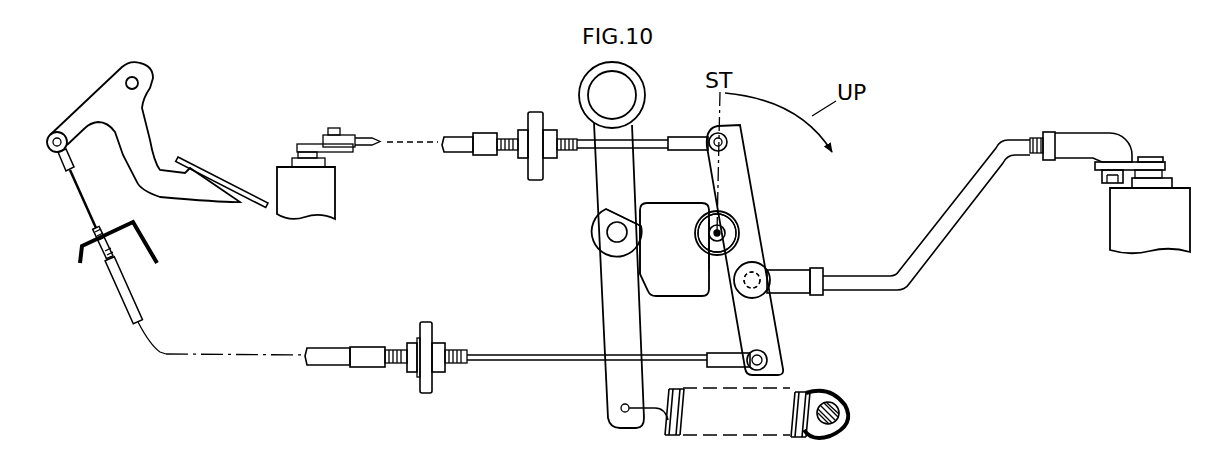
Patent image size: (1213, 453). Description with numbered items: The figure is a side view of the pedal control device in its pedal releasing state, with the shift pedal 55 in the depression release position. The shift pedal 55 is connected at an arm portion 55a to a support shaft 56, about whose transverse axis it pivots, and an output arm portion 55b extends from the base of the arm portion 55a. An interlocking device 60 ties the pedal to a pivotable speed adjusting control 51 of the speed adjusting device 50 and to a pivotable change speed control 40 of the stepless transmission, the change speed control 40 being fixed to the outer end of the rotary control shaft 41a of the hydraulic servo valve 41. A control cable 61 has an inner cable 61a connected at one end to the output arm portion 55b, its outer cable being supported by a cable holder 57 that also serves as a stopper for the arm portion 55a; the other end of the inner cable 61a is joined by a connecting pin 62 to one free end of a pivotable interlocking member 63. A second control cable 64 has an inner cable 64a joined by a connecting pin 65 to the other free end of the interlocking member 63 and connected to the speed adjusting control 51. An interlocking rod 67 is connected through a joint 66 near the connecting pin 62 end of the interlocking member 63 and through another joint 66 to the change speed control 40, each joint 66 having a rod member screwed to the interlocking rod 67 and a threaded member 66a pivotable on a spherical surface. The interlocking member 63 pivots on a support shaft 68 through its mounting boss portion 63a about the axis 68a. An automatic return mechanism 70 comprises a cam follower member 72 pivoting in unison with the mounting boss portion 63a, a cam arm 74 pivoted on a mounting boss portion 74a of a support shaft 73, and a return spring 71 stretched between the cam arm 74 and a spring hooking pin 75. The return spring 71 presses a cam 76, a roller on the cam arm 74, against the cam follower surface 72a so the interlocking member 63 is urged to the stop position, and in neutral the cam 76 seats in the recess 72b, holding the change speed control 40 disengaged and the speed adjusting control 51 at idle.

The change speed control 40 is at (1137, 160).
The hydraulic servo valve 41 is at (1118, 242).
The rotary control shaft 41a is at (1150, 160).
The speed adjusting device 50 is at (335, 200).
The speed adjusting control 51 is at (320, 143).
The shift pedal 55 is at (233, 177).
The arm portion 55a is at (140, 137).
The output arm portion 55b is at (73, 122).
The support shaft 56 is at (138, 83).
The cable holder 57 is at (157, 250).
The interlocking device 60 is at (882, 181).
The control cable 61 is at (333, 350).
The inner cable 61a is at (558, 363).
The connecting pin 62 is at (772, 357).
The pivotable interlocking member 63 is at (759, 245).
The mounting boss portion 63a is at (705, 240).
The control cable 64 is at (460, 150).
The inner cable 64a is at (650, 137).
The connecting pin 65 is at (728, 141).
The joint 66 is at (743, 294).
The threaded member 66a is at (770, 267).
The interlocking rod 67 is at (943, 223).
The support shaft 68 is at (707, 227).
The axis 68a is at (737, 221).
The automatic return mechanism 70 is at (550, 245).
The return spring 71 is at (803, 397).
The cam follower member 72 is at (700, 295).
The cam follower surface 72a is at (636, 260).
The recess 72b is at (604, 208).
The support shaft 73 is at (602, 90).
The cam arm 74 is at (604, 322).
The mounting boss portion 74a is at (572, 103).
The spring hooking pin 75 is at (848, 415).
The cam 76 is at (598, 230).